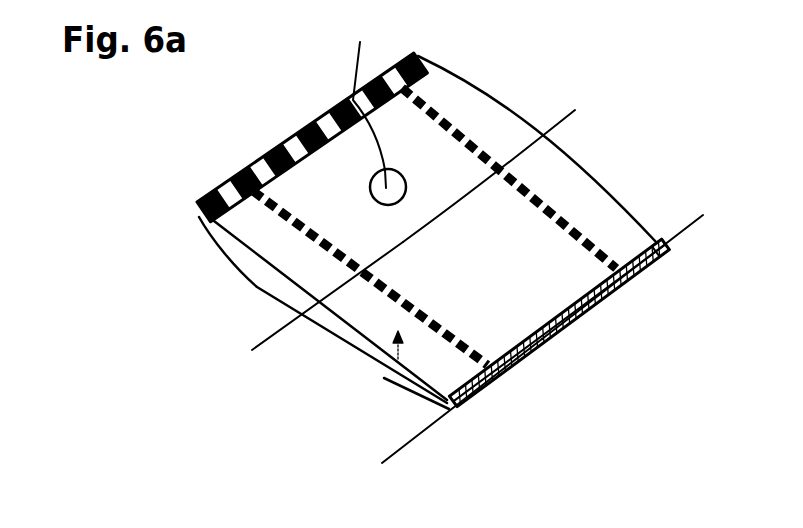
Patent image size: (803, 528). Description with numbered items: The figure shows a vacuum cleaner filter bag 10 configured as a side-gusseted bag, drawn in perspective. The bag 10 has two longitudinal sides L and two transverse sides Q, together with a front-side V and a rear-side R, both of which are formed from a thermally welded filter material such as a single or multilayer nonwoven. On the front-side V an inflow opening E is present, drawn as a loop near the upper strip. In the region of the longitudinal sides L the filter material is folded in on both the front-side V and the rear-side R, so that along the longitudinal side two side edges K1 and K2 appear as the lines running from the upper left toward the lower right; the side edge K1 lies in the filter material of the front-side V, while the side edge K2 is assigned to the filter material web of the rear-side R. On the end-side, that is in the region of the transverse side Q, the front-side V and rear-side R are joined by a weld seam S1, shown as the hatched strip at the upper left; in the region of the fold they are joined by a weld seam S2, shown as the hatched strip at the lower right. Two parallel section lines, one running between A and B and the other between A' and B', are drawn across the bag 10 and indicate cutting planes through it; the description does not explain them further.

The vacuum cleaner filter bag 10 is at (300, 97).
The inflow opening E is at (379, 107).
The weld seam S1 is at (214, 184).
The weld seam S2 is at (483, 334).
The side edge K1 is at (247, 252).
The side edge K2 is at (259, 291).
The longitudinal side L is at (613, 176).
The rear-side R is at (390, 377).
The axis A is at (306, 314).
The axis A prime A' is at (431, 426).
The axis B is at (510, 162).
The axis B prime B' is at (649, 259).
The front-side V is at (540, 291).
The transverse side Q is at (652, 268).